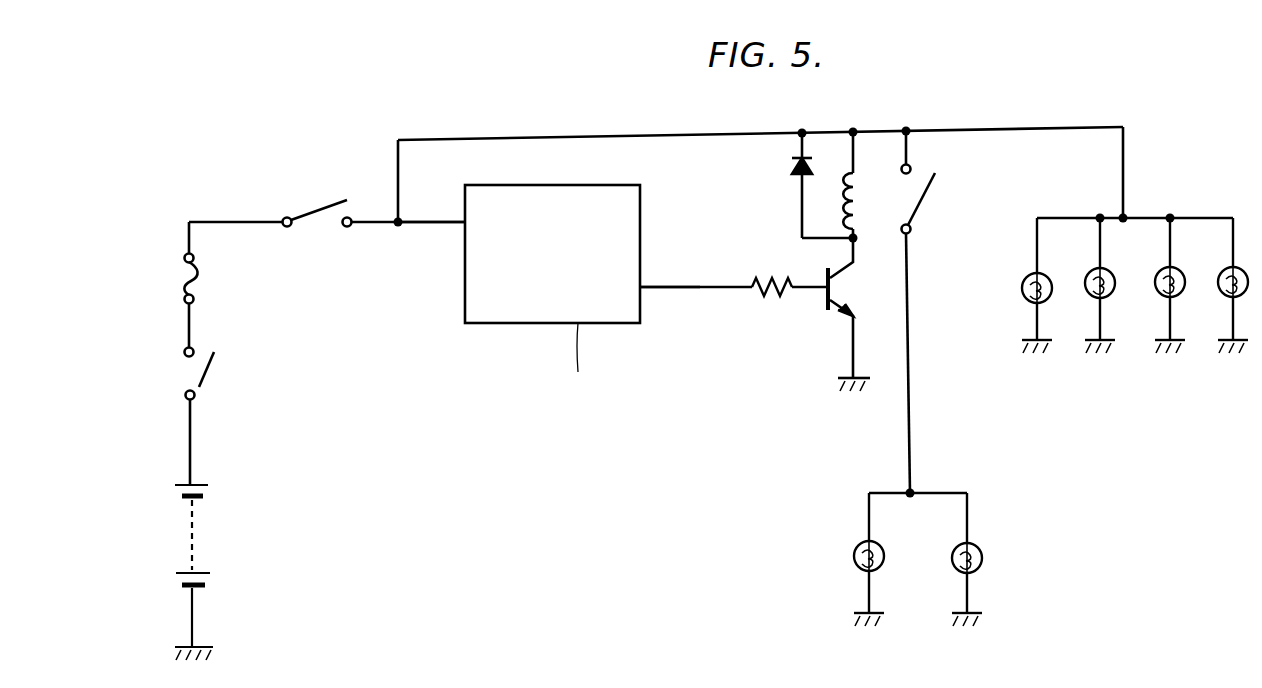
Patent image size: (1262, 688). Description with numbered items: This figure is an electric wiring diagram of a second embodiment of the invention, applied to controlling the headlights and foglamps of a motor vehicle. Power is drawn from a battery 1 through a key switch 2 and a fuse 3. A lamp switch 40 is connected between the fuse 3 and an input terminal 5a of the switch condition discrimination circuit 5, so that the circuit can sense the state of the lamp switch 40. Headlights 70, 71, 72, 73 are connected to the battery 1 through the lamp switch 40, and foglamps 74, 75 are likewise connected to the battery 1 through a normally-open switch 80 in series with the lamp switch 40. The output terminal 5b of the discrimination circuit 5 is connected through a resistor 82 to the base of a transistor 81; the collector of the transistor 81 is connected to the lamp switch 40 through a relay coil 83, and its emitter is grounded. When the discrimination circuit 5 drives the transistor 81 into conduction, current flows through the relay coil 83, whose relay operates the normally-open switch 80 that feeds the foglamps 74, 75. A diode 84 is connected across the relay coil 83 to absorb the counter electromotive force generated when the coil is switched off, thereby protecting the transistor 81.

The battery 1 is at (212, 524).
The key switch 2 is at (205, 388).
The fuse 3 is at (200, 280).
The lamp switch 40 is at (333, 227).
The switch condition discrimination circuit 5 is at (510, 322).
The input terminal 5a is at (462, 225).
The output terminal 5b is at (645, 290).
The normally-open switch 80 is at (925, 205).
The transistor 81 is at (850, 283).
The resistor 82 is at (773, 300).
The relay coil 83 is at (862, 205).
The diode 84 is at (787, 165).
The headlight 70 is at (1022, 305).
The headlight 71 is at (1092, 300).
The headlight 72 is at (1162, 299).
The headlight 73 is at (1226, 299).
The foglamp 74 is at (858, 568).
The foglamp 75 is at (955, 572).